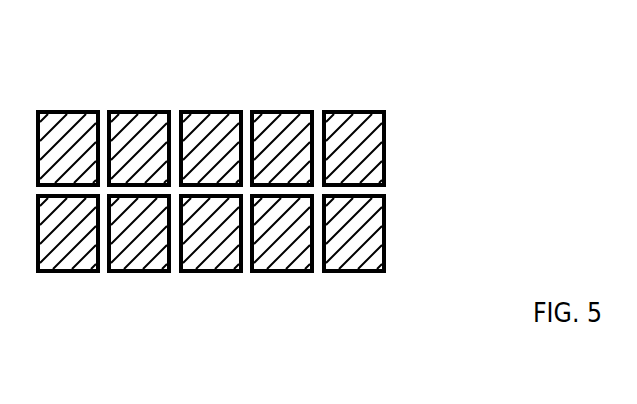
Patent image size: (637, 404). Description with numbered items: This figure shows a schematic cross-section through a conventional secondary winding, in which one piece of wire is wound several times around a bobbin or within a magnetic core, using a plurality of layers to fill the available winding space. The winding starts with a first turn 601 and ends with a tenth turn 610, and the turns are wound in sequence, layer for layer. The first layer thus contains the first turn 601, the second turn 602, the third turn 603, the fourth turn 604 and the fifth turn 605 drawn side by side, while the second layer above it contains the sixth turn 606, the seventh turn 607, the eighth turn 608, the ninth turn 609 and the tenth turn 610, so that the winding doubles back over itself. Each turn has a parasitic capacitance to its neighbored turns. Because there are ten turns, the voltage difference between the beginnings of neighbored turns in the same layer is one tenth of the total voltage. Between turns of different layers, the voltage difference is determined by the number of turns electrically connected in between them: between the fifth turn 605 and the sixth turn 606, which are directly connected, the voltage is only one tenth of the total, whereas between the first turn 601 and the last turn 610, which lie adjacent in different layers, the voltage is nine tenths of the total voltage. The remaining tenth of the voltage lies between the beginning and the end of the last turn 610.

The first turn 601 is at (67, 253).
The second turn 602 is at (138, 253).
The third turn 603 is at (210, 253).
The fourth turn 604 is at (281, 253).
The fifth turn 605 is at (352, 253).
The sixth turn 606 is at (353, 128).
The seventh turn 607 is at (282, 128).
The eighth turn 608 is at (210, 128).
The ninth turn 609 is at (139, 128).
The tenth turn 610 is at (67, 128).